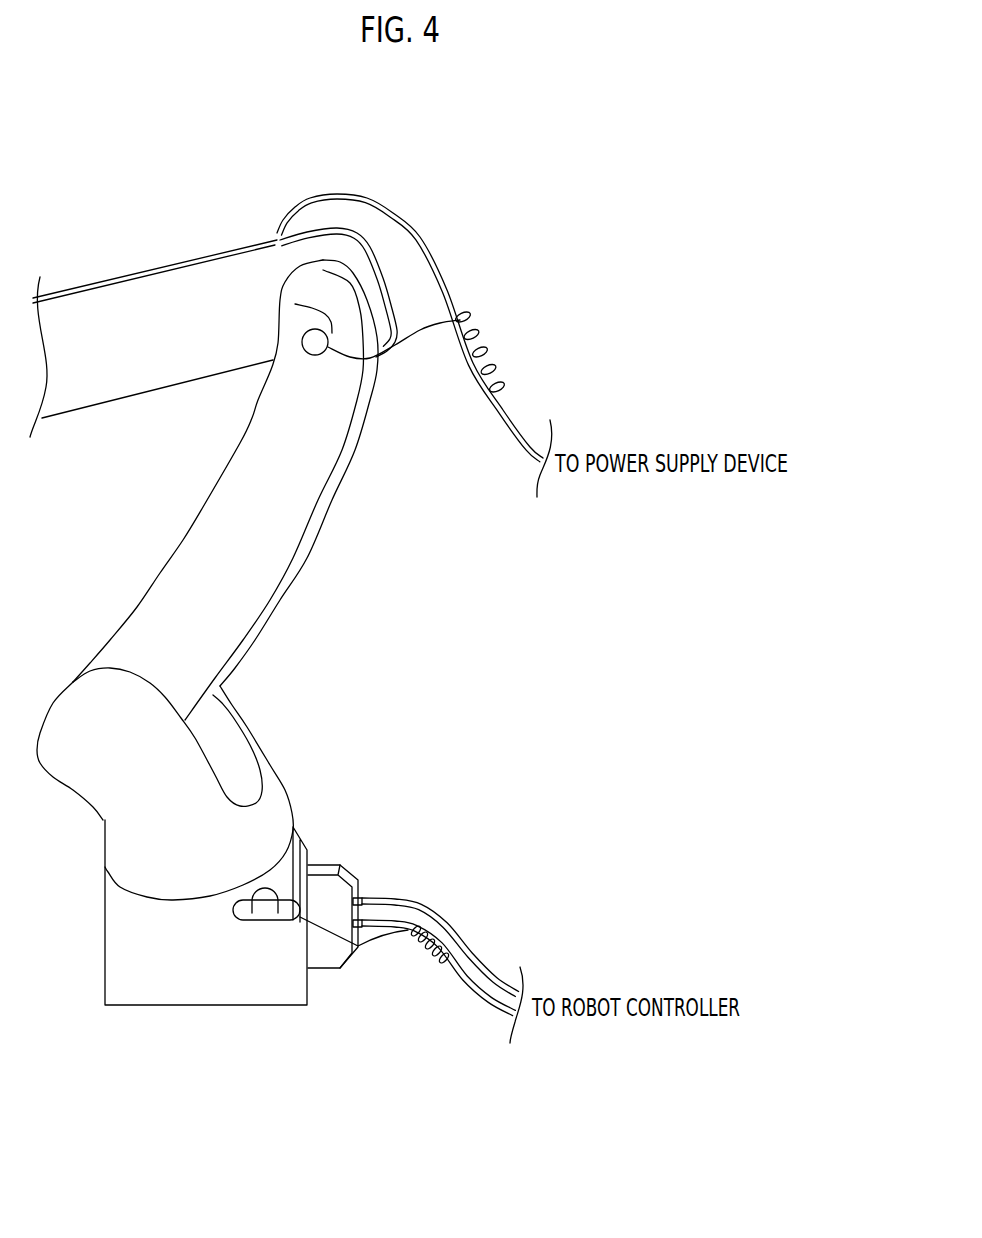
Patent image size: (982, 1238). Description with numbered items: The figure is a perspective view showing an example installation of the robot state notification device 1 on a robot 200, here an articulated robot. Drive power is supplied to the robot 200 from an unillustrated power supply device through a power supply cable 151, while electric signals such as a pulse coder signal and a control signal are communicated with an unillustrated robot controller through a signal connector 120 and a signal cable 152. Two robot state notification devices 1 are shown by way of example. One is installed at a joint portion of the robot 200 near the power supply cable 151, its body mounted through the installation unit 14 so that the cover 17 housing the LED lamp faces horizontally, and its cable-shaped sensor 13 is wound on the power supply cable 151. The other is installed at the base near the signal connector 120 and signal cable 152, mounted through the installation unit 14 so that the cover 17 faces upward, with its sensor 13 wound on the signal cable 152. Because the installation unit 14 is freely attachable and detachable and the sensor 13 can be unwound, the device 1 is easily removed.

The robot state notification device 1 is at (321, 369).
The sensor 13 is at (424, 333).
The installation unit 14 is at (295, 304).
The cover 17 is at (302, 345).
The signal connector 120 is at (335, 862).
The power supply cable 151 is at (423, 242).
The signal cable 152 is at (475, 963).
The robot 200 is at (123, 277).